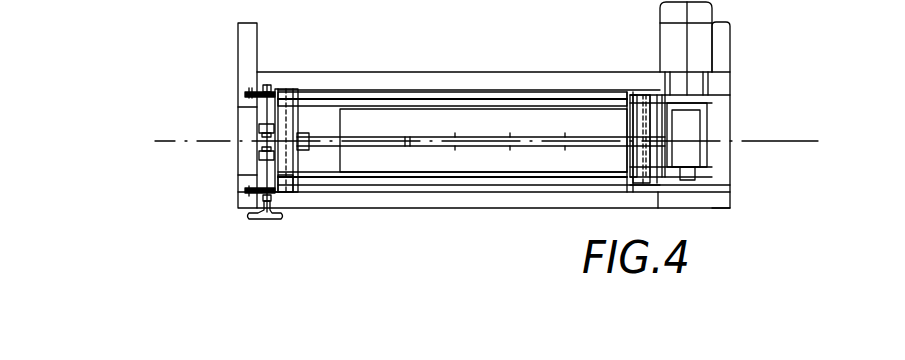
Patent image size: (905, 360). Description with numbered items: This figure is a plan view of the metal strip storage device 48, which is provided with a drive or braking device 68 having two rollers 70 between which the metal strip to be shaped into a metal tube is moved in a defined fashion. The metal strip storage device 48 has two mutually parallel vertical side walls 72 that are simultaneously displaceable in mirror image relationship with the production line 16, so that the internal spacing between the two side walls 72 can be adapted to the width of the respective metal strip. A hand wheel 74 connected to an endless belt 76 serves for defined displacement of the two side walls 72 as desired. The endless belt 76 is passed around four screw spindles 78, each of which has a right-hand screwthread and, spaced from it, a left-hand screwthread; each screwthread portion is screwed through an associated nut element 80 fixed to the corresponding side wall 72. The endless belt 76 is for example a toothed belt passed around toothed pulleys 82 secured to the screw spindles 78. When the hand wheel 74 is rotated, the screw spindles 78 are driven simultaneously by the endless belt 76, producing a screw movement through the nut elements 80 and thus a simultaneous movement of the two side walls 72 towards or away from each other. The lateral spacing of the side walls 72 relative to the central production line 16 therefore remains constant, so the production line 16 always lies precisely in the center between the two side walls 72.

The production line 16 is at (165, 138).
The metal strip storage device 48 is at (470, 250).
The drive or braking device 68 is at (703, 120).
The rollers 70 is at (696, 156).
The vertical side walls 72 is at (342, 268).
The hand wheel 74 is at (258, 226).
The endless belt 76 is at (409, 98).
The screw spindles 78 is at (262, 142).
The nut element 80 is at (262, 127).
The toothed pulleys 82 is at (262, 92).